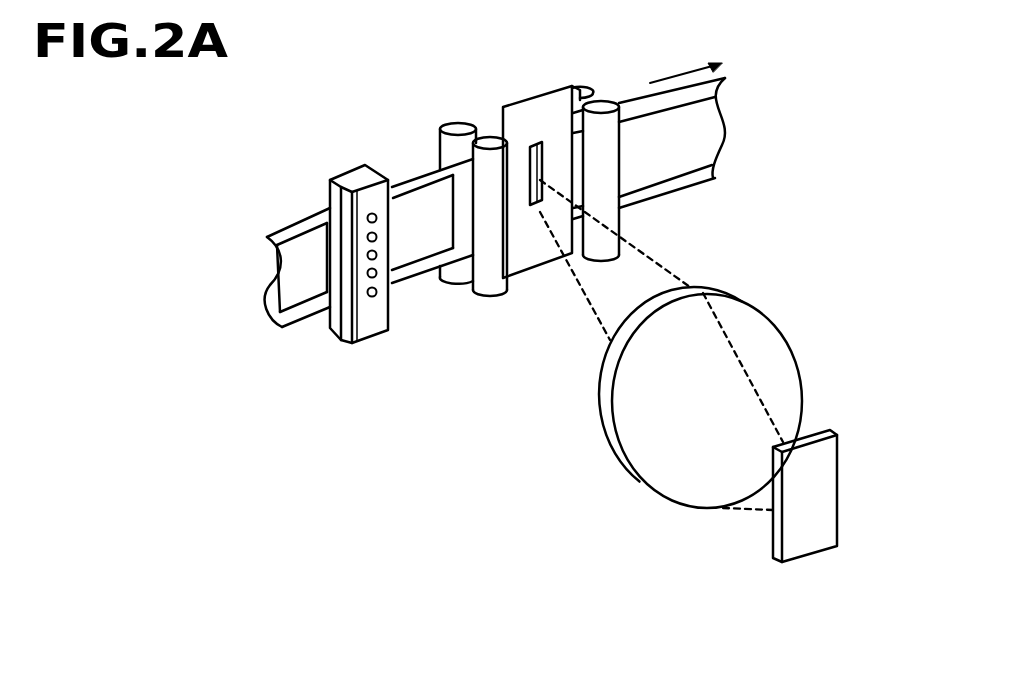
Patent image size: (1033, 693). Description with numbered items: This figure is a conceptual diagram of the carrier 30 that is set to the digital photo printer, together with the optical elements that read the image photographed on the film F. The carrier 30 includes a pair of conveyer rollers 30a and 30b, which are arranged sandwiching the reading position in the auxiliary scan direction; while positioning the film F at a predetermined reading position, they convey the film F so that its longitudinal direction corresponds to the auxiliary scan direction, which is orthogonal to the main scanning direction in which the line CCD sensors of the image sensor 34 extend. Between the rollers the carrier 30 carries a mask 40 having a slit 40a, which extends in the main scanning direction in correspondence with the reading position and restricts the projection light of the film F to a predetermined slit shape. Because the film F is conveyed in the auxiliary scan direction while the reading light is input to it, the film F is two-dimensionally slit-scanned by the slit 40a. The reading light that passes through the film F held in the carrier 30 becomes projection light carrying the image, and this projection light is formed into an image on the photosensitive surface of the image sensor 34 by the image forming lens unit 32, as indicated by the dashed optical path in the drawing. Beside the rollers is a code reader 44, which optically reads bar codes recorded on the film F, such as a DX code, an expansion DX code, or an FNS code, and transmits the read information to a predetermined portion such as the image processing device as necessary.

The carrier 30 is at (593, 202).
The conveyer roller 30a is at (487, 283).
The conveyer roller 30b is at (598, 185).
The mask 40 is at (565, 180).
The slit 40a is at (537, 145).
The code reader 44 is at (350, 177).
The film F is at (695, 135).
The image forming lens unit 32 is at (753, 332).
The image sensor 34 is at (818, 488).